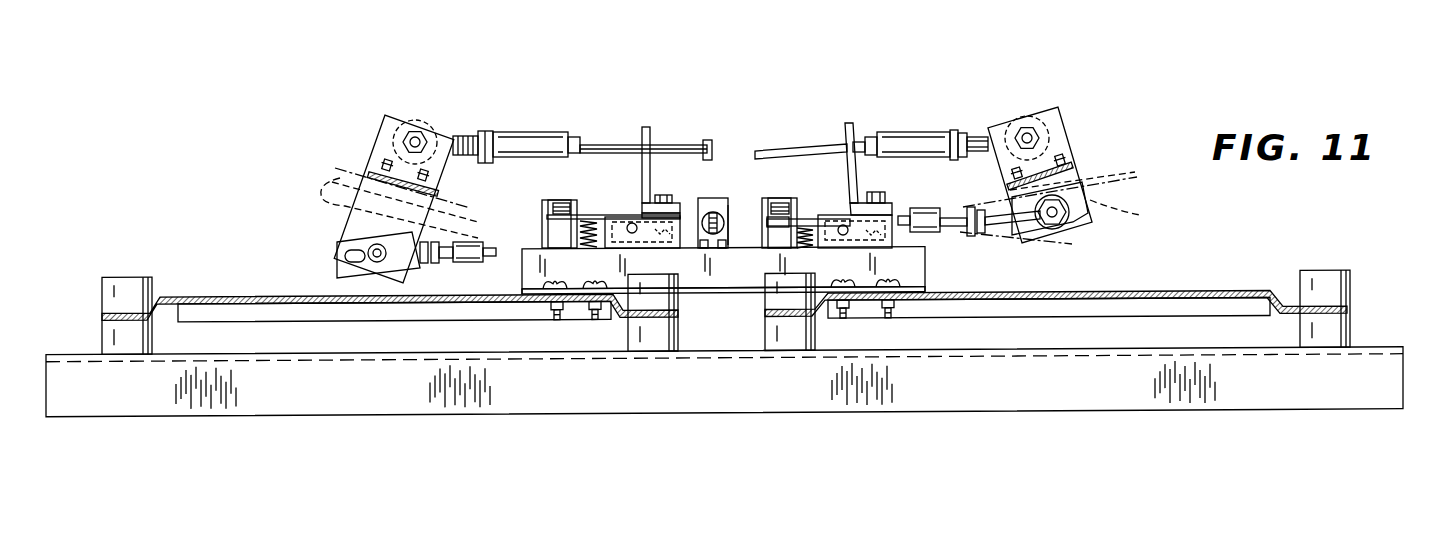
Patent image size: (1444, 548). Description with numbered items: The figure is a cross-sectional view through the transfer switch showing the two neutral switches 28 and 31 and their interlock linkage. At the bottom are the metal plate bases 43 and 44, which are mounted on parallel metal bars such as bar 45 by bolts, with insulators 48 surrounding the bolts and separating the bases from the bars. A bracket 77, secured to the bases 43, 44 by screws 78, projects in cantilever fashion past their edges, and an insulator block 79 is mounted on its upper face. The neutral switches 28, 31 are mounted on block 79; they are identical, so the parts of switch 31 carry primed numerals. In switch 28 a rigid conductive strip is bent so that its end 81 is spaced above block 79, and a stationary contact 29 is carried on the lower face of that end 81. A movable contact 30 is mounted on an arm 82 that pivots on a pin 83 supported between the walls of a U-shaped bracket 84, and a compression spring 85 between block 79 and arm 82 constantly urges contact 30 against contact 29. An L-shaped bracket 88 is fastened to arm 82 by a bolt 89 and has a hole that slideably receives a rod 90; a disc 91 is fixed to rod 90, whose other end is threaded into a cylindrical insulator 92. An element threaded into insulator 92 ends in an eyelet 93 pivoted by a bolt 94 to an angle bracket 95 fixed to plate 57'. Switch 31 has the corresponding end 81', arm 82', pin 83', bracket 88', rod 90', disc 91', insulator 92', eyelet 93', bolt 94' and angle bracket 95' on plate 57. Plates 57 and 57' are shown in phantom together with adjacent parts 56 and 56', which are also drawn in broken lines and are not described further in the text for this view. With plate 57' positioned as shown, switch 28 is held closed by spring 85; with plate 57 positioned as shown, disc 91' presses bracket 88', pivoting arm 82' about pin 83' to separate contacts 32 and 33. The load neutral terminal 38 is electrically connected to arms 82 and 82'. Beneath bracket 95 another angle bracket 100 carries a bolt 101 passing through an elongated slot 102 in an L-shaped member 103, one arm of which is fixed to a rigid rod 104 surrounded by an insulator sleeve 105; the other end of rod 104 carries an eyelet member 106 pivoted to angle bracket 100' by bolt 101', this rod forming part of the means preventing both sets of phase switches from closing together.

The neutral switch 28 is at (519, 180).
The stationary contact 29 is at (551, 200).
The movable contact 30 is at (557, 215).
The neutral switch 31 is at (822, 197).
The contact 32 is at (775, 205).
The contact 33 is at (755, 226).
The load neutral terminal 38 is at (733, 215).
The metal plate base 43 is at (1228, 299).
The metal plate base 44 is at (205, 299).
The metal bar 45 is at (400, 405).
The insulator 48 is at (116, 314).
The right guide outline 56 is at (1093, 204).
The left guide outline 56' is at (360, 208).
The plate 57 is at (1055, 185).
The plate 57' is at (391, 162).
The bracket 77 is at (535, 295).
The screw 78 is at (557, 321).
The insulator block 79 is at (735, 297).
The end of strip 81 is at (579, 186).
The end of strip 81' is at (813, 194).
The arm 82 is at (639, 211).
The arm 82' is at (852, 222).
The pin 83 is at (669, 192).
The pin 83' is at (851, 252).
The U-shaped bracket 84 is at (678, 237).
The compression spring 85 is at (583, 246).
The L-shaped bracket 88 is at (679, 148).
The L-shaped bracket 88' is at (878, 144).
The bolt 89 is at (650, 240).
The rod 90 is at (643, 123).
The rod 90' is at (801, 131).
The disc 91 is at (740, 127).
The disc 91' is at (895, 124).
The cylindrical insulator 92 is at (516, 127).
The cylindrical insulator 92' is at (934, 119).
The eyelet 93 is at (430, 115).
The eyelet 93' is at (1063, 106).
The bolt 94 is at (450, 117).
The bolt 94' is at (1027, 116).
The angle bracket 95 is at (394, 173).
The angle bracket 95' is at (1067, 167).
The angle bracket 100 is at (323, 200).
The angle bracket 100' is at (1106, 180).
The bolt 101 is at (338, 294).
The bolt 101' is at (1090, 234).
The elongated slot 102 is at (337, 255).
The L-shaped member 103 is at (343, 240).
The rigid rod 104 is at (495, 253).
The insulator sleeve 105 is at (463, 262).
The eyelet member 106 is at (1020, 231).